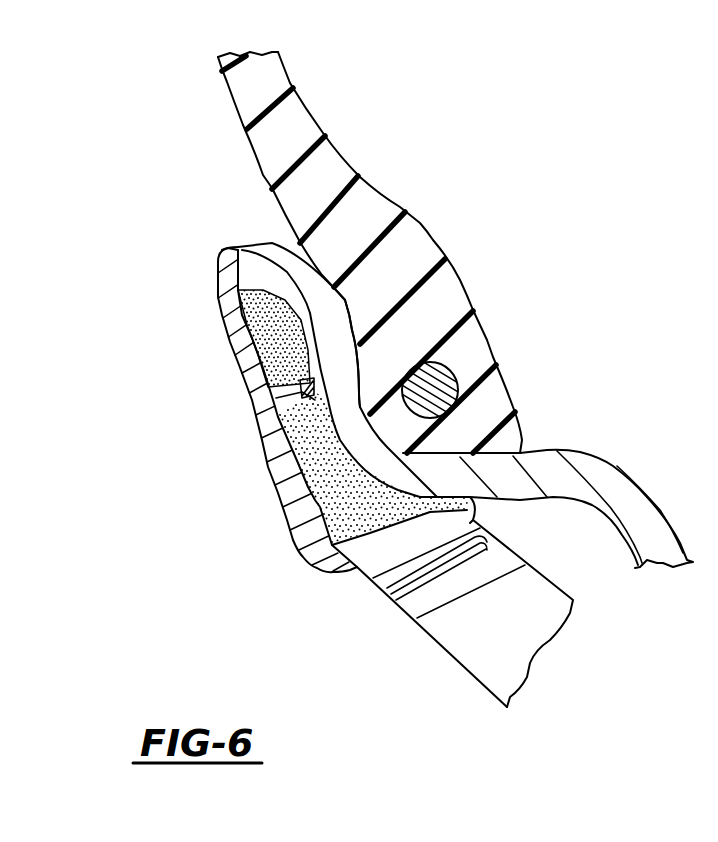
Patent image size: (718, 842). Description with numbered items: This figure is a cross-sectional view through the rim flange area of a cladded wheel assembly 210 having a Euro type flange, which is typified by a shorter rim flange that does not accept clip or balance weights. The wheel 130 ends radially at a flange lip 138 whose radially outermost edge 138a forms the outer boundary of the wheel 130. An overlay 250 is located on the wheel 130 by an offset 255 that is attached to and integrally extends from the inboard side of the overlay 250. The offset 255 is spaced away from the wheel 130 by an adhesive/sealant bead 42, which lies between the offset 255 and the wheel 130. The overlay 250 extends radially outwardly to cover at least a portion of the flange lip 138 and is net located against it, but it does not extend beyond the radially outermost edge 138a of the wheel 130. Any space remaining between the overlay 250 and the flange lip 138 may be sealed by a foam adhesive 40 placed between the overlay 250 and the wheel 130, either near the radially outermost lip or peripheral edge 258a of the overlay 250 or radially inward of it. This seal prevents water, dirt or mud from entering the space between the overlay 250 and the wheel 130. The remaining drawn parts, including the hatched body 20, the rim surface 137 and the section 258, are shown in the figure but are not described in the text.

The vehicle body panel 20 is at (242, 93).
The curved lip surface 137 is at (347, 383).
The wheel 130 is at (640, 455).
The foam adhesive 40 is at (220, 335).
The seal extension 258 is at (218, 270).
The peripheral edge 258a is at (226, 246).
The radially outermost edge 138a is at (258, 244).
The flange lip 138 is at (219, 284).
The offset 255 is at (278, 402).
The adhesive/sealant bead 42 is at (270, 440).
The overlay 250 is at (381, 624).
The cladded wheel assembly 210 is at (137, 503).